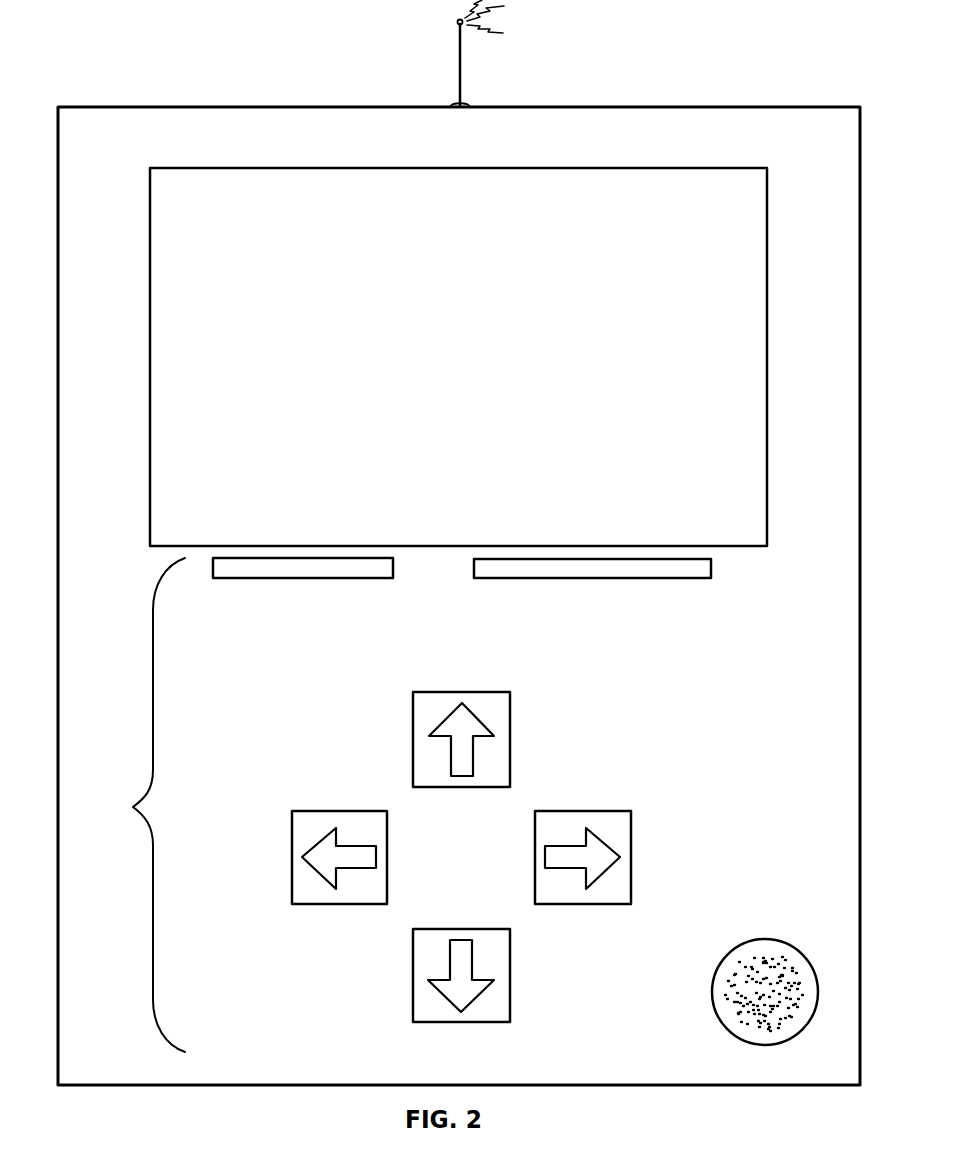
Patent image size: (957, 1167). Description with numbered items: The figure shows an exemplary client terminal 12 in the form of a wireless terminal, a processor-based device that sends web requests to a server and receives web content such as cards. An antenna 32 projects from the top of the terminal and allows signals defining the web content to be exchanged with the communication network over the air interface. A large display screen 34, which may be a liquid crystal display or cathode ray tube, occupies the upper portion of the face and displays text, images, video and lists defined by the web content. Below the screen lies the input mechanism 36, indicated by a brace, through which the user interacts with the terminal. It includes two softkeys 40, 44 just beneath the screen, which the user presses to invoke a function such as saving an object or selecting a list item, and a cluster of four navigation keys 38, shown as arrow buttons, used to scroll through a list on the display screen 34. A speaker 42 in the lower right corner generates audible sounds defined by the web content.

The client terminal 12 is at (107, 105).
The antenna 32 is at (459, 62).
The display screen 34 is at (202, 166).
The input mechanism 36 is at (146, 805).
The navigation keys 38 is at (462, 691).
The softkey 40 is at (264, 580).
The speaker 42 is at (764, 938).
The softkey 44 is at (522, 580).